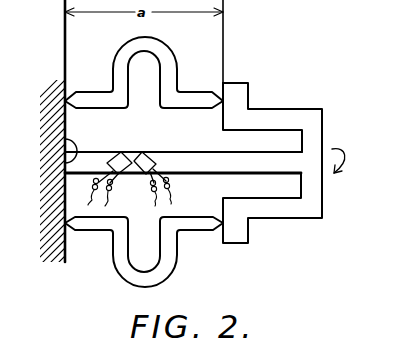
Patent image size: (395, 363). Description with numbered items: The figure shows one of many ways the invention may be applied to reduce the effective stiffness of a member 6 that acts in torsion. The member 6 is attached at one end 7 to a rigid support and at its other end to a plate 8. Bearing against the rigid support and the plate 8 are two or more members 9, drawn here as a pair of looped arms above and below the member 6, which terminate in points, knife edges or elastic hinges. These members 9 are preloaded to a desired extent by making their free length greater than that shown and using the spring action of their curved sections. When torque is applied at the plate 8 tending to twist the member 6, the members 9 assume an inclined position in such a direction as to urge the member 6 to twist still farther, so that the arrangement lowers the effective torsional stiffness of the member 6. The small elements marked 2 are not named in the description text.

The heating elements 2 is at (119, 174).
The member 6 is at (193, 152).
The end 7 is at (66, 143).
The plate 8 is at (312, 127).
The members 9 is at (162, 50).